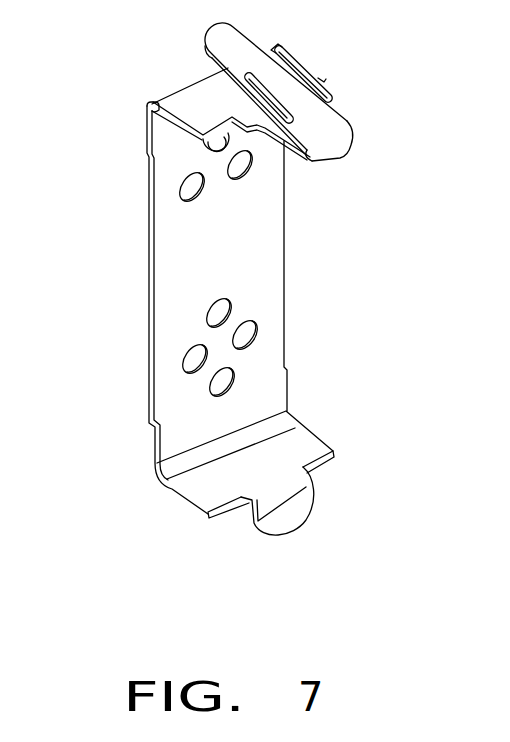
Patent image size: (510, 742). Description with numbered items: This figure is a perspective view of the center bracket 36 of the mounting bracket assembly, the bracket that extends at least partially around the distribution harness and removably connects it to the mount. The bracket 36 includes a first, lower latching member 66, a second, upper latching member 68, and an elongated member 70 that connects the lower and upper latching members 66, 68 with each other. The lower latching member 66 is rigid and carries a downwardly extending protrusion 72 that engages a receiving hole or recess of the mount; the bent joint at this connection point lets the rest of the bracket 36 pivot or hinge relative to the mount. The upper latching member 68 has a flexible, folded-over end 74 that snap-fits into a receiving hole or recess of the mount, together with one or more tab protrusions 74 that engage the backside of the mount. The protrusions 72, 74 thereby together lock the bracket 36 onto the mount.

The center bracket 36 is at (219, 305).
The lower latching member 66 is at (309, 532).
The upper latching member 68 is at (345, 166).
The elongated member 70 is at (262, 294).
The downwardly extending protrusion 72 is at (276, 522).
The protrusions 74 is at (248, 89).